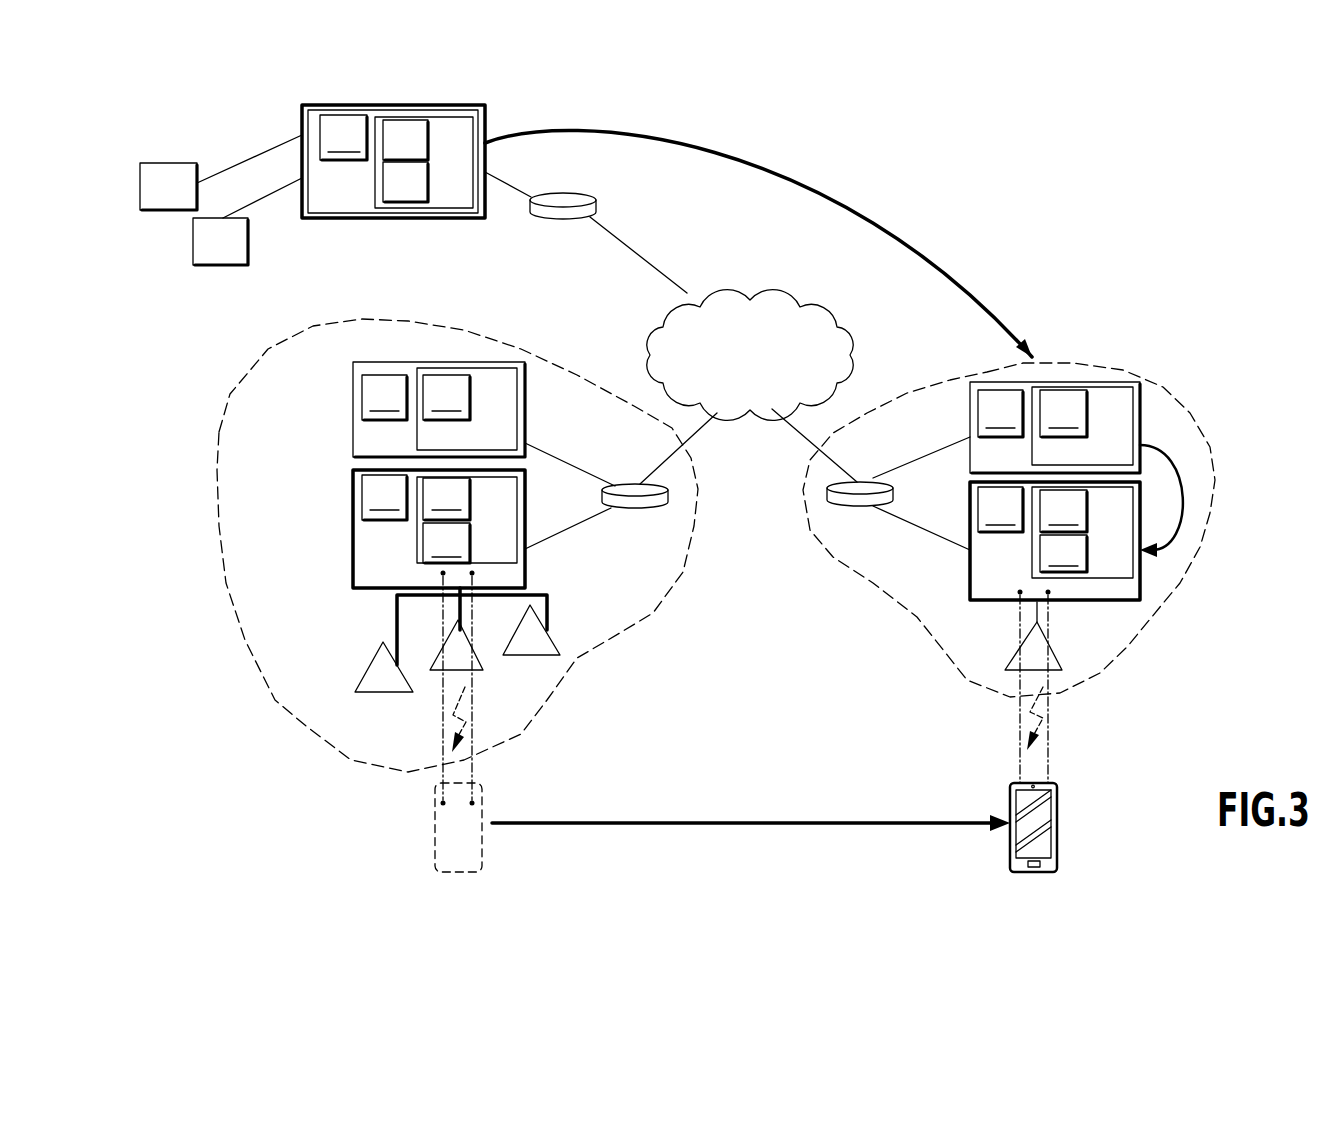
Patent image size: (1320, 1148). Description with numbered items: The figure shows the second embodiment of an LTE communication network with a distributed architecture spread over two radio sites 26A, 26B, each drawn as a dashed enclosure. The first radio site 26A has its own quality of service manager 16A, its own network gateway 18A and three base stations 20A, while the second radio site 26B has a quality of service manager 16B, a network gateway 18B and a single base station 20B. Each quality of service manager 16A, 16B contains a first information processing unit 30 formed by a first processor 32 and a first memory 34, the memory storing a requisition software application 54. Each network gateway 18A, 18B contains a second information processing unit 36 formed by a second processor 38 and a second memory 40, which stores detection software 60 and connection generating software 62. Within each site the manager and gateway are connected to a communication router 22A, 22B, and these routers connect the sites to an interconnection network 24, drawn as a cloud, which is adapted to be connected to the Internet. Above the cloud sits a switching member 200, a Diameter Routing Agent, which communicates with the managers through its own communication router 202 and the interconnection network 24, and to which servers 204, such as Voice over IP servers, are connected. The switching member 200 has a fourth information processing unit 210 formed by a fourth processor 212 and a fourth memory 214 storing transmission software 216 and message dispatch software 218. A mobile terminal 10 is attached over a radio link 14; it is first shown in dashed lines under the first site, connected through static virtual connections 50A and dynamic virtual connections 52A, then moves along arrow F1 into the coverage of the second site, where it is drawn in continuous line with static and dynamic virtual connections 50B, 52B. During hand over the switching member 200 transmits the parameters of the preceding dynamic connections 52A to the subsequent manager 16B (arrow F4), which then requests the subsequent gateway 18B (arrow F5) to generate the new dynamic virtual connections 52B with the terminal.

The mobile terminal 10 is at (435, 838).
The radio link 14 is at (1037, 727).
The quality of service manager 16A is at (353, 392).
The quality of service manager 16B is at (1140, 397).
The network gateway 18A is at (353, 516).
The network gateway 18B is at (1140, 588).
The base station 20A is at (370, 667).
The base station 20B is at (1012, 658).
The communication router 22A is at (649, 503).
The communication router 22B is at (848, 505).
The interconnection network 24 is at (832, 306).
The radio site 26A is at (608, 640).
The radio site 26B is at (905, 607).
The first information processing unit 30 is at (356, 440).
The first processor 32 is at (692, 406).
The first memory 34 is at (417, 432).
The second information processing unit 36 is at (356, 560).
The second processor 38 is at (692, 503).
The second memory 40 is at (417, 542).
The static virtual connection 50A is at (443, 728).
The static virtual connection 50B is at (1020, 722).
The dynamic virtual connection 52A is at (472, 733).
The dynamic virtual connection 52B is at (1047, 623).
The requisition software application 54 is at (755, 406).
The detection software 60 is at (755, 505).
The connection generating software 62 is at (755, 547).
The switching member 200 is at (379, 218).
The communication router 202 is at (583, 193).
The server 204 is at (160, 163).
The fourth information processing unit 210 is at (334, 213).
The fourth processor 212 is at (343, 137).
The fourth memory 214 is at (375, 180).
The transmission software 216 is at (405, 140).
The message dispatch software 218 is at (405, 182).
The arrow F1 is at (770, 812).
The arrow F4 is at (845, 193).
The arrow F5 is at (1182, 492).